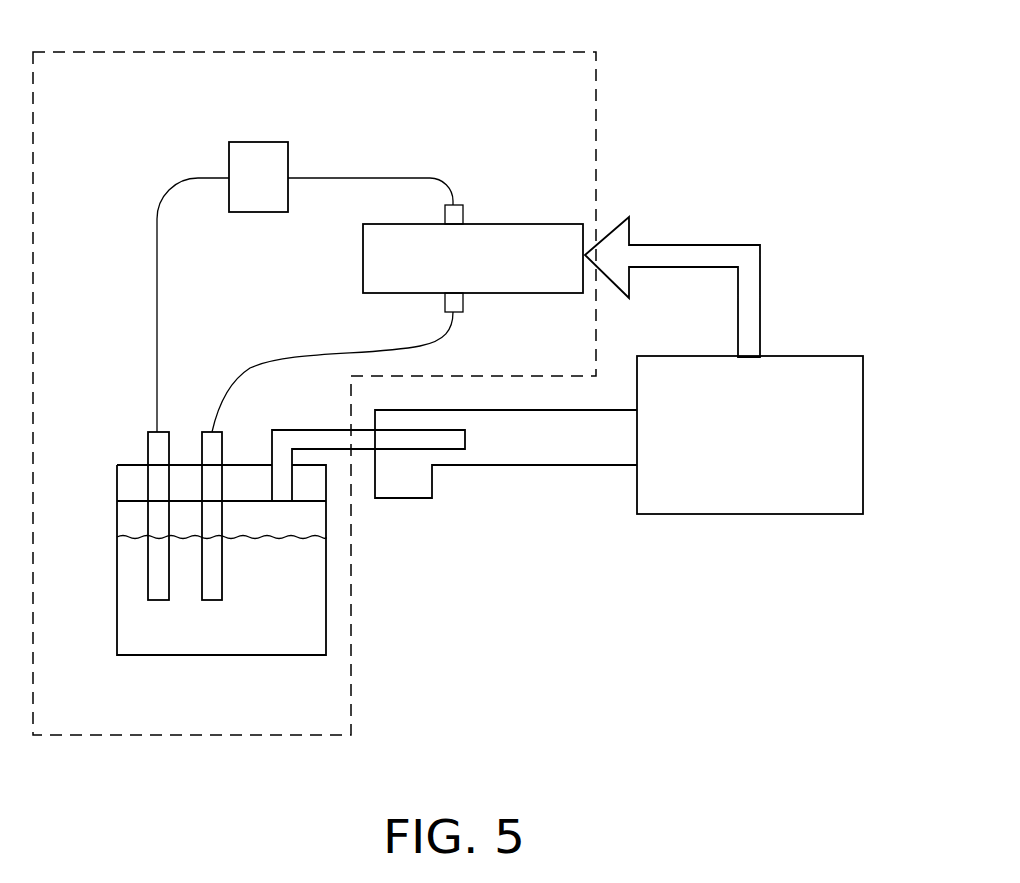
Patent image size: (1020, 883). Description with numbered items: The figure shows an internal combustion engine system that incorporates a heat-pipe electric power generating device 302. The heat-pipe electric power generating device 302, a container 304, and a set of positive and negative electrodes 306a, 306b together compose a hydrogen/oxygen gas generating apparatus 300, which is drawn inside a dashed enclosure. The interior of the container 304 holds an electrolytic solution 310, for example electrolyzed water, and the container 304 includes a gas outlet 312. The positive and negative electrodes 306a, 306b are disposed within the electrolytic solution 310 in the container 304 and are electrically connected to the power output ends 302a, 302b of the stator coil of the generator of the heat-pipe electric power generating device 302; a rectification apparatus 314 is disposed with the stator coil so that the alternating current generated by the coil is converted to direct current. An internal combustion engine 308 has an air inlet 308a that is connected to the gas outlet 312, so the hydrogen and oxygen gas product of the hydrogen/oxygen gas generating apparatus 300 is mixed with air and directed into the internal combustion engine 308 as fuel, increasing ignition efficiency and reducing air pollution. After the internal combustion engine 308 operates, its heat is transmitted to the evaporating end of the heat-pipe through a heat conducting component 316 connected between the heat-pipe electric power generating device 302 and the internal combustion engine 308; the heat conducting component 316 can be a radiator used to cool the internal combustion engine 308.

The hydrogen/oxygen gas generating apparatus 300 is at (228, 52).
The heat-pipe electric power generating device 302 is at (532, 224).
The power output end 302a is at (453, 213).
The power output end 302b is at (460, 300).
The container 304 is at (117, 564).
The positive electrode 306a is at (158, 450).
The negative electrode 306b is at (207, 447).
The internal combustion engine 308 is at (832, 357).
The air inlet 308a is at (523, 465).
The electrolytic solution 310 is at (271, 625).
The gas outlet 312 is at (318, 430).
The rectification apparatus 314 is at (288, 162).
The heat conducting component 316 is at (697, 245).